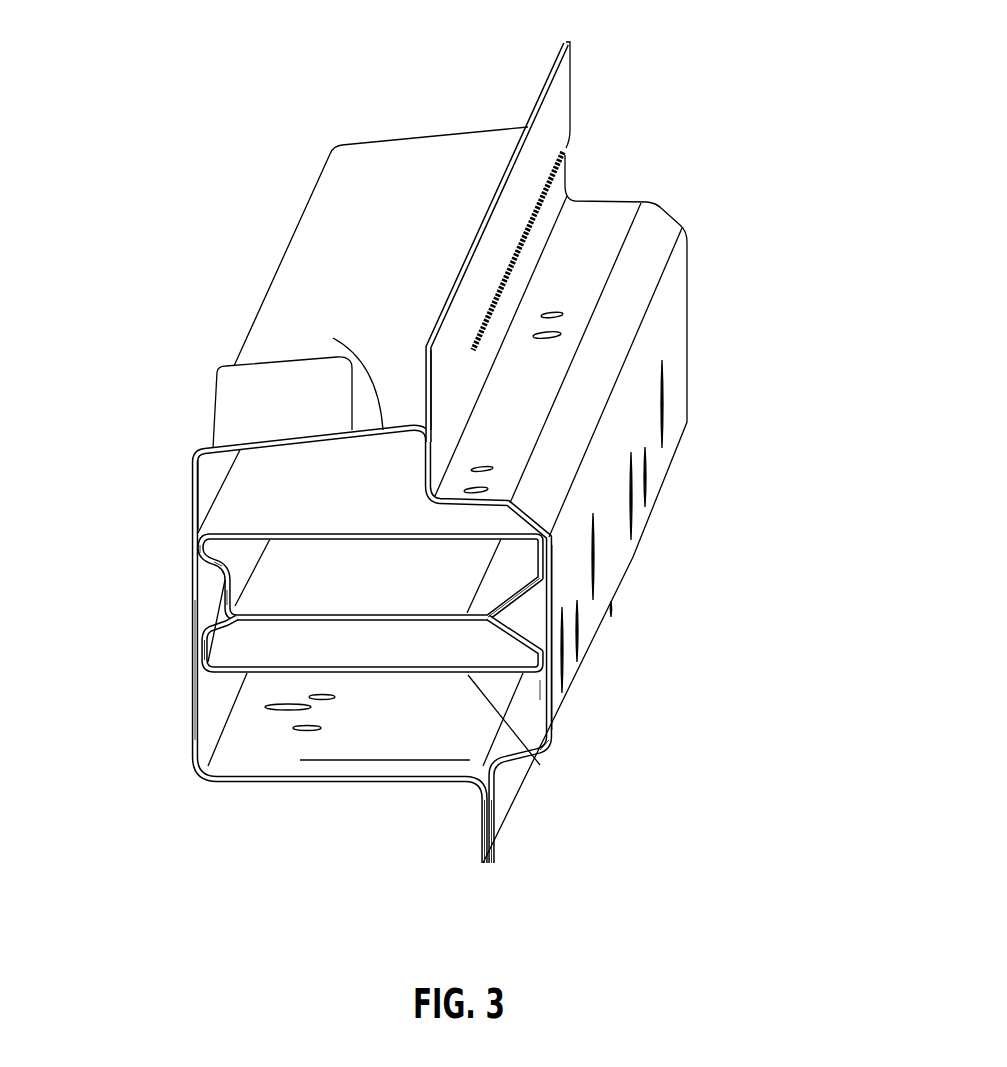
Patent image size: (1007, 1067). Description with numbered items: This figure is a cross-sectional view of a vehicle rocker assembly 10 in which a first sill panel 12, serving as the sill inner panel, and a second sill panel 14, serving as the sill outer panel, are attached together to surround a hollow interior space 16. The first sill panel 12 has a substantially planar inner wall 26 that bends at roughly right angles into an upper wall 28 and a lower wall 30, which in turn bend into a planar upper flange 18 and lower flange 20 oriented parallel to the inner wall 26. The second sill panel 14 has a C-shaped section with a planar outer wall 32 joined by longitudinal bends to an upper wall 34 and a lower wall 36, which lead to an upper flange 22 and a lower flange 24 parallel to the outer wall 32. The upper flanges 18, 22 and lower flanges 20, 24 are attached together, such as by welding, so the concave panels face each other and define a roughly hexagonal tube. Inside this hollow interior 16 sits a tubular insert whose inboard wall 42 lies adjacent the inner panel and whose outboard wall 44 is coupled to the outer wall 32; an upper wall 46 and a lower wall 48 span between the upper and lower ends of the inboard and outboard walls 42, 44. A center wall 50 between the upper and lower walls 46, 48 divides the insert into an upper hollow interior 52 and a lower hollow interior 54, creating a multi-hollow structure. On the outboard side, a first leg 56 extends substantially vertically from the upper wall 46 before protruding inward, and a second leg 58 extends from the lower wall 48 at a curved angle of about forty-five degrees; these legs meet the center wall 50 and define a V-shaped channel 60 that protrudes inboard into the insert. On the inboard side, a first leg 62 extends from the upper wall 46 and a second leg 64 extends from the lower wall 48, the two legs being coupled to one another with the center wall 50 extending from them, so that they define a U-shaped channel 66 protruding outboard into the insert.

The vehicle rocker assembly 10 is at (703, 94).
The first sill panel 12 is at (193, 507).
The second sill panel 14 is at (553, 612).
The hollow interior space 16 is at (219, 491).
The upper flange 18 is at (425, 375).
The lower flange 20 is at (482, 833).
The upper flange 22 is at (437, 378).
The lower flange 24 is at (497, 822).
The inner wall 26 is at (193, 716).
The upper wall 28 is at (357, 362).
The lower wall 30 is at (272, 782).
The outer wall 32 is at (540, 690).
The upper wall 34 is at (445, 488).
The lower wall 36 is at (517, 753).
The inboard wall 42 is at (198, 565).
The outboard wall 44 is at (490, 534).
The upper wall 46 is at (445, 530).
The lower wall 48 is at (402, 675).
The center wall 50 is at (540, 765).
The upper hollow interior 52 is at (360, 596).
The lower hollow interior 54 is at (387, 657).
The first leg 56 is at (513, 610).
The second leg 58 is at (553, 705).
The channel 60 is at (556, 640).
The first leg 62 is at (227, 580).
The second leg 64 is at (197, 650).
The channel 66 is at (205, 601).